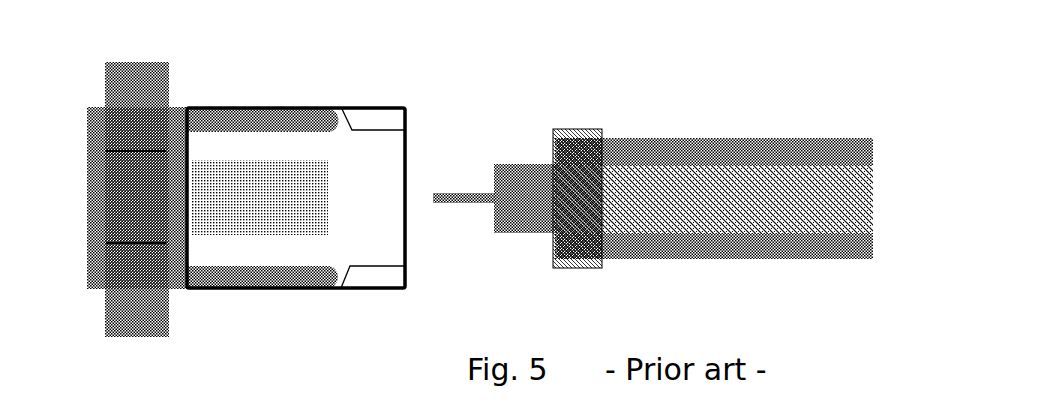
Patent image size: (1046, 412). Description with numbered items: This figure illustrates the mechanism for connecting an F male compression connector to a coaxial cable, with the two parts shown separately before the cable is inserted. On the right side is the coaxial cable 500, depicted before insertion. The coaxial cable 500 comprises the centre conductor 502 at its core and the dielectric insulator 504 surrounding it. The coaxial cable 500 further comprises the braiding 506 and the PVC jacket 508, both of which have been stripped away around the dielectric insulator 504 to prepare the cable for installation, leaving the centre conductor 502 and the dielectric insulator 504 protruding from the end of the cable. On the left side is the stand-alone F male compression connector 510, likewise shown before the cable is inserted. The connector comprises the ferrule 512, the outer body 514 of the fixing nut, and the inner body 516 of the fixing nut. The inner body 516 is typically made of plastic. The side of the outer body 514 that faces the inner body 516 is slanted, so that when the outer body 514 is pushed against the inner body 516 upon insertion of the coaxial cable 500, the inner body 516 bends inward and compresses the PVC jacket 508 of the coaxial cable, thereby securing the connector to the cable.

The coaxial cable 500 is at (818, 98).
The centre conductor 502 is at (464, 185).
The dielectric insulator 504 is at (525, 185).
The braiding 506 is at (648, 187).
The PVC jacket 508 is at (725, 145).
The F male compression connector 510 is at (60, 148).
The ferrule 512 is at (259, 197).
The outer body of the fixing nut 514 is at (380, 117).
The inner body of the fixing nut 516 is at (336, 129).